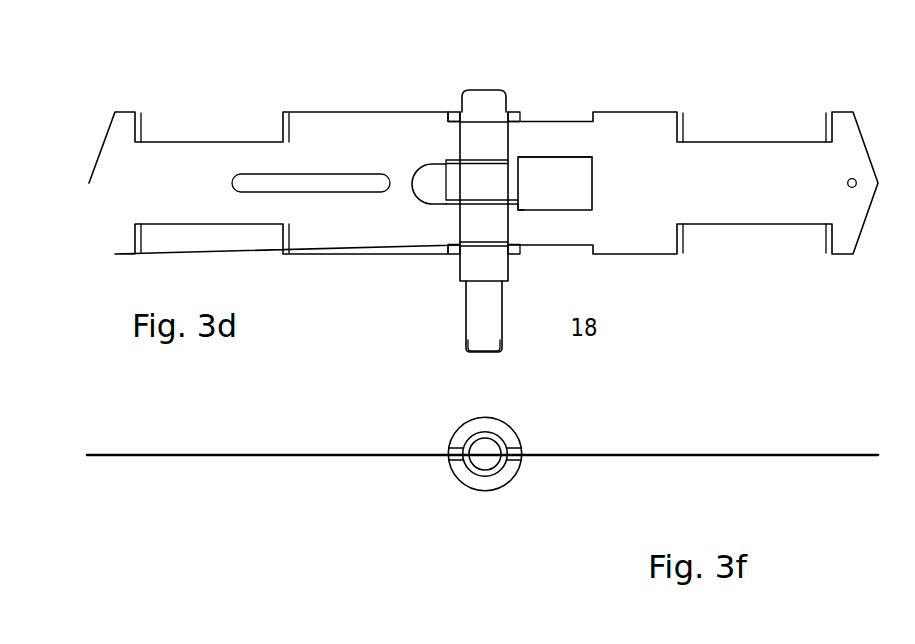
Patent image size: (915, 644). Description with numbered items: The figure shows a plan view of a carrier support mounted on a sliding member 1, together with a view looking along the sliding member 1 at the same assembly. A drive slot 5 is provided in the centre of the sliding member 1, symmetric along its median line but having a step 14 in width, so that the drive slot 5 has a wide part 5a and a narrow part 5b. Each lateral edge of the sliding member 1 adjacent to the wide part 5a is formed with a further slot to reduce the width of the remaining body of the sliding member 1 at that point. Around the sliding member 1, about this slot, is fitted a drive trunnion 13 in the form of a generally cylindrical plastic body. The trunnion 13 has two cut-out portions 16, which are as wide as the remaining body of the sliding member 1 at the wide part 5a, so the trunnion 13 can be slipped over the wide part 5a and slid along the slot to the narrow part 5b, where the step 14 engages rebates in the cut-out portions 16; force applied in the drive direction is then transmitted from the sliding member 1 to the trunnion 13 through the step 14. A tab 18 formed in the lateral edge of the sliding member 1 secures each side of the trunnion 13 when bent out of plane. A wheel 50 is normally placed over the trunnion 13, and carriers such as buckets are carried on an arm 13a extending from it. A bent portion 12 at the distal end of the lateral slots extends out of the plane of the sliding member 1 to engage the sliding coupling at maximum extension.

In FIG. 3D, the sliding member 1 is at (774, 225).
In FIG. 3D, the drive slot 5 is at (540, 163).
In FIG. 3D, the wide part of drive slot 5a is at (573, 156).
In FIG. 3D, the narrow part of drive slot 5b is at (447, 197).
In FIG. 3F, the bent portion 12 is at (830, 458).
In FIG. 3D, the drive trunnion 13 is at (483, 317).
In FIG. 3F, the drive trunnion 13 is at (508, 447).
In FIG. 3D, the arm 13a is at (492, 353).
In FIG. 3F, the arm 13a is at (492, 470).
In FIG. 3D, the step 14 is at (523, 206).
In FIG. 3D, the cut-out portions 16 is at (465, 223).
In FIG. 3D, the tab 18 is at (513, 115).
In FIG. 3D, the wheel 50 is at (471, 178).
In FIG. 3F, the wheel 50 is at (518, 430).